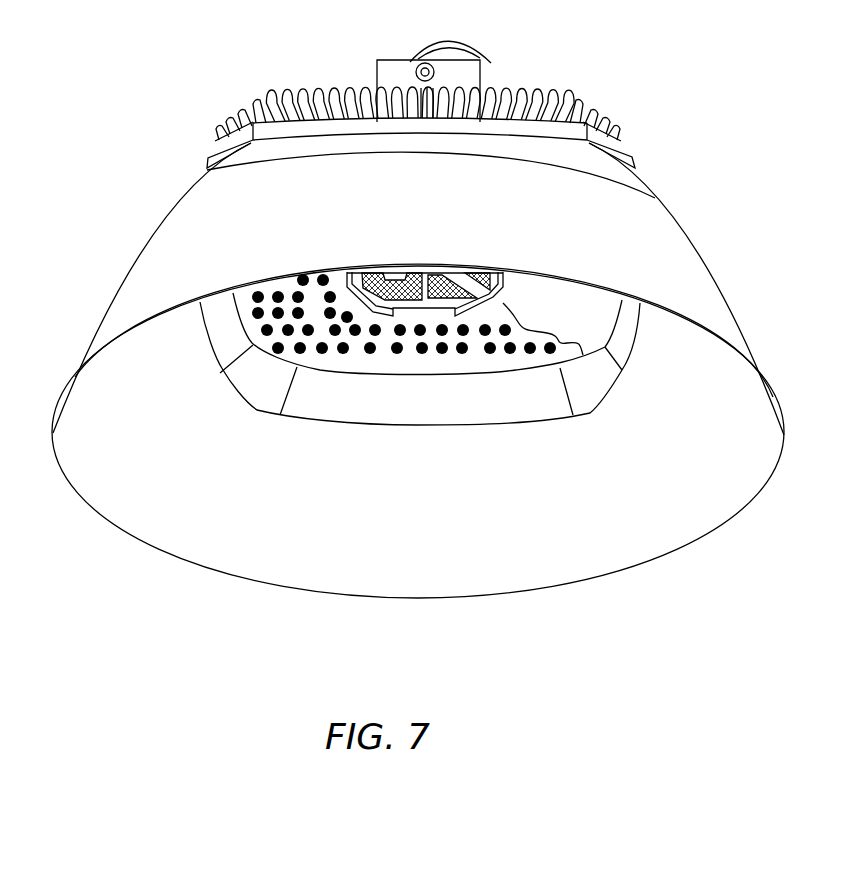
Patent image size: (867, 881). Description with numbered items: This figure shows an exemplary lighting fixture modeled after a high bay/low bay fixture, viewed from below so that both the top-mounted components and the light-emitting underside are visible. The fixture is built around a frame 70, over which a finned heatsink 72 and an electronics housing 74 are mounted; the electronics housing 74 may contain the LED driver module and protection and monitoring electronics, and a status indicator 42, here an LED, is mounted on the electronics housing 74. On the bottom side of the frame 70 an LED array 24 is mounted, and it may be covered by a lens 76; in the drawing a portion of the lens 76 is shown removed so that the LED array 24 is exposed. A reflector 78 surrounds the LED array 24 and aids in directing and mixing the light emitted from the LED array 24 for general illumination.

The LED array 24 is at (270, 347).
The status indicator 42 is at (417, 66).
The frame 70 is at (627, 153).
The heatsink 72 is at (565, 100).
The electronics housing 74 is at (473, 77).
The lens 76 is at (560, 322).
The reflector 78 is at (732, 520).